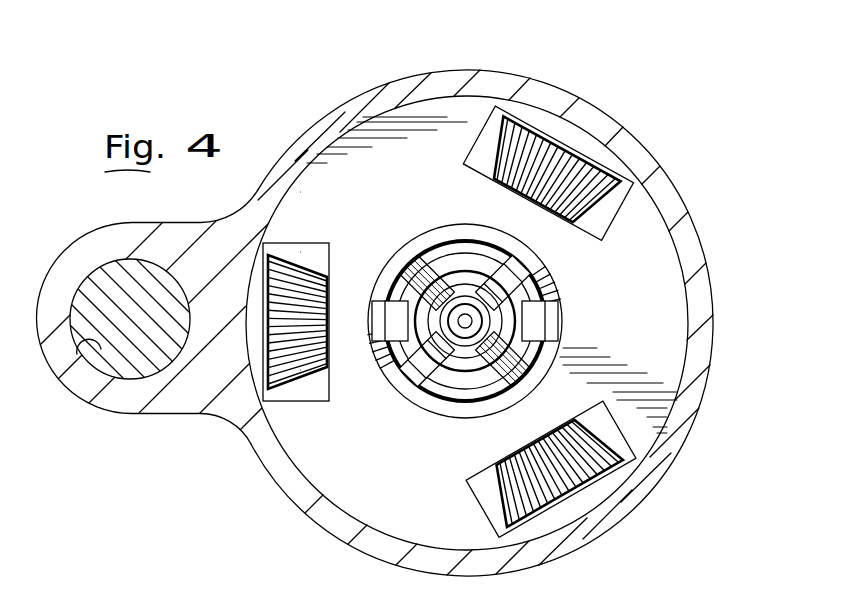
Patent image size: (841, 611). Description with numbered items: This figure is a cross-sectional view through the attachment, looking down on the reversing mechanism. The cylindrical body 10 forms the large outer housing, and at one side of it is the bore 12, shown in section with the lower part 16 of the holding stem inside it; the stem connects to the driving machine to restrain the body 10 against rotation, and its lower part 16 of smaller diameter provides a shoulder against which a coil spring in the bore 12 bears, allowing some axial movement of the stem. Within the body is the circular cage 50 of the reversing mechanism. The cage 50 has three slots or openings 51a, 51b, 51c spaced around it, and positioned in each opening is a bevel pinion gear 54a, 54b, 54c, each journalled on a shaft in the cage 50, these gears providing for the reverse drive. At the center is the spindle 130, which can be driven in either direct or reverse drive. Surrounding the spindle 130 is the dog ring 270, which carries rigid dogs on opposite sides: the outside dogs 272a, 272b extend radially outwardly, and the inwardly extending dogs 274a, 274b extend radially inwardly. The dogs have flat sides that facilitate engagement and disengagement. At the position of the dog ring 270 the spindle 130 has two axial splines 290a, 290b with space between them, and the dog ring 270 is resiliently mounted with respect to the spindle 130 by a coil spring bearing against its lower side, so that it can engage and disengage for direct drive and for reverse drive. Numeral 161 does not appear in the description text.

The body 10 is at (652, 126).
The bore 12 is at (133, 348).
The lower part of the stem 16 is at (134, 350).
The cage 50 is at (652, 240).
The slot or opening 51a is at (464, 522).
The slot or opening 51b is at (284, 398).
The slot or opening 51c is at (479, 134).
The bevel pinion gear 54a is at (582, 490).
The bevel pinion gear 54b is at (292, 275).
The bevel pinion gear 54c is at (568, 150).
The spindle 130 is at (452, 243).
The shaft 161 is at (474, 278).
The dog ring 270 is at (535, 268).
The outside dog 272a is at (372, 330).
The outside dog 272b is at (556, 322).
The inwardly extending dog 274a is at (423, 374).
The inwardly extending dog 274b is at (552, 294).
The axial spline 290a is at (415, 260).
The axial spline 290b is at (563, 373).